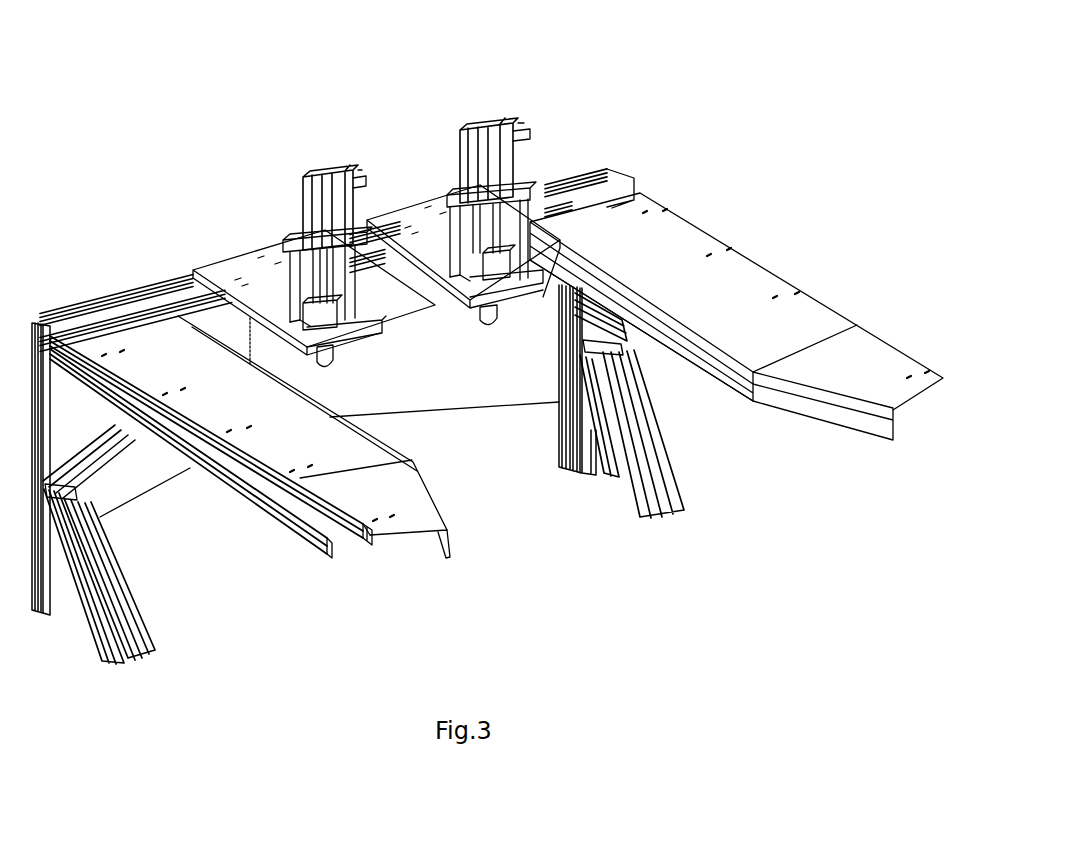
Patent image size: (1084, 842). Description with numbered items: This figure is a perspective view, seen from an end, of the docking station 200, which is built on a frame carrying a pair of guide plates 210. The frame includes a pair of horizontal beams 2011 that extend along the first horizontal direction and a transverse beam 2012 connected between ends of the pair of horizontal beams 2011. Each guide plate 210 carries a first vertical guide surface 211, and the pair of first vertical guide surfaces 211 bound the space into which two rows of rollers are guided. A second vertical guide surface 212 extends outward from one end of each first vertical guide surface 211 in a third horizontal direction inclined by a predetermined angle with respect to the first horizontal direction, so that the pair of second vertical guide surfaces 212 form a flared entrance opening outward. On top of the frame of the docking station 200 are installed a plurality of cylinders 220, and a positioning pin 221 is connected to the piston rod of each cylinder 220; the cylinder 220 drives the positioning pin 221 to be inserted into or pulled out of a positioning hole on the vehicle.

The docking station 200 is at (598, 138).
The horizontal beam 2011 is at (295, 507).
The transverse beam 2012 is at (127, 297).
The guide plate 210 is at (267, 431).
The first vertical guide surface 211 is at (382, 448).
The second vertical guide surface 212 is at (448, 525).
The cylinder 220 is at (300, 192).
The positioning pin 221 is at (338, 360).